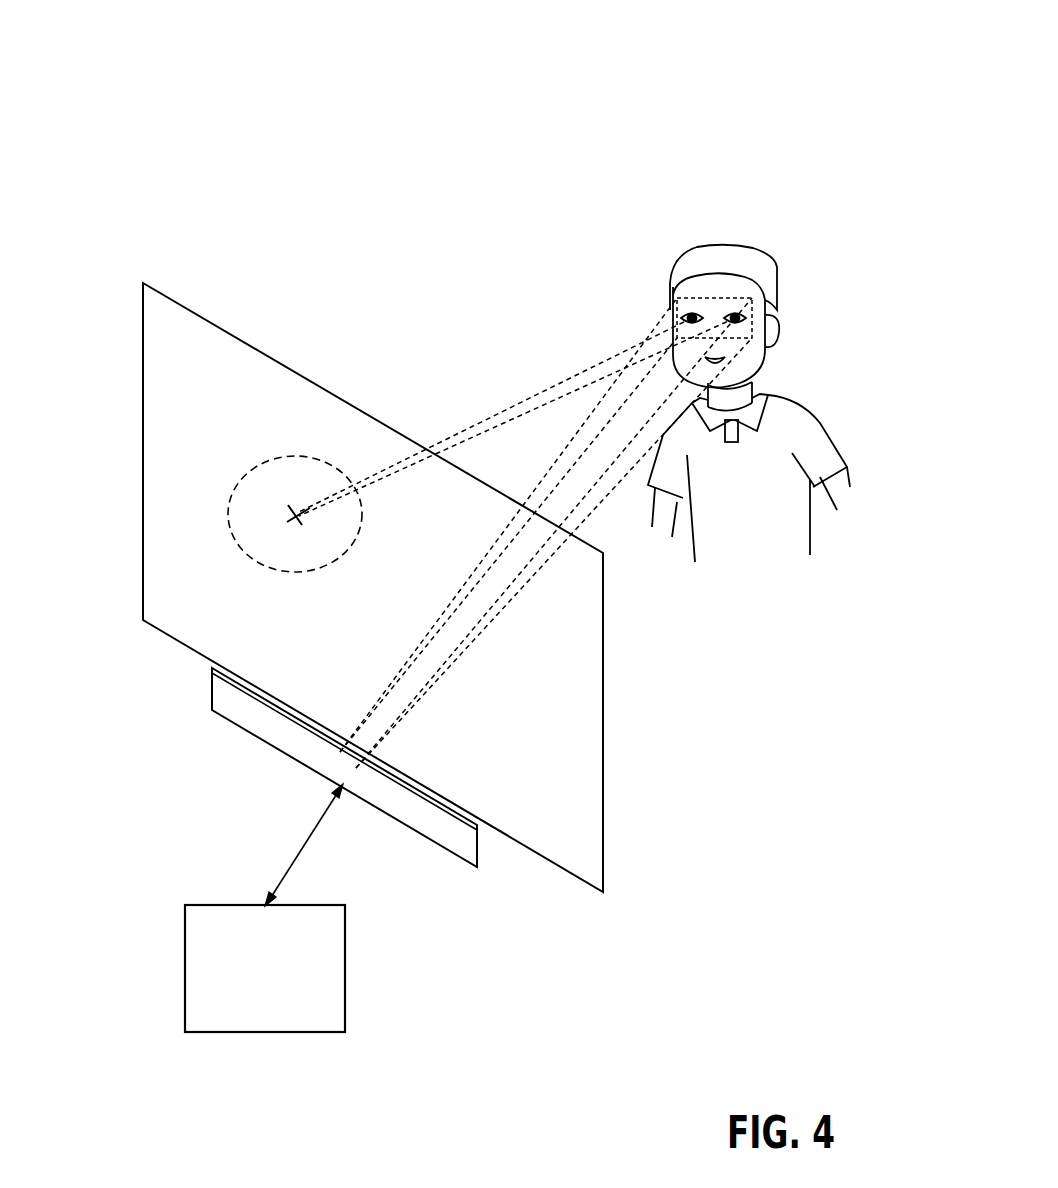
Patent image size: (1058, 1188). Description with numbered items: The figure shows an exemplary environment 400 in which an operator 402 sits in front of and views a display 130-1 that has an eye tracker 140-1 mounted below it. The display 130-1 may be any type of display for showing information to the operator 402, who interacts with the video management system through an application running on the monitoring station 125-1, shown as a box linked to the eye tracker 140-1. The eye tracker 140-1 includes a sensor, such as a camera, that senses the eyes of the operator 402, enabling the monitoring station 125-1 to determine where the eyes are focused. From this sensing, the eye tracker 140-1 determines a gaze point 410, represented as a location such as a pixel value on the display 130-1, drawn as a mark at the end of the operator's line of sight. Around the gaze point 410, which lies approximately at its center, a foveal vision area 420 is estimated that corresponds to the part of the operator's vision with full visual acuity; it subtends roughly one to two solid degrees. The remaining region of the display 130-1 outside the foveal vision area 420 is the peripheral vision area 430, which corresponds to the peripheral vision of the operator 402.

The environment 400 is at (291, 102).
The operator 402 is at (790, 403).
The display 130-1 is at (310, 587).
The eye tracker 140-1 is at (289, 767).
The monitoring station 125-1 is at (265, 908).
The gaze point 410 is at (402, 602).
The foveal vision area 420 is at (190, 504).
The peripheral vision area 430 is at (278, 620).